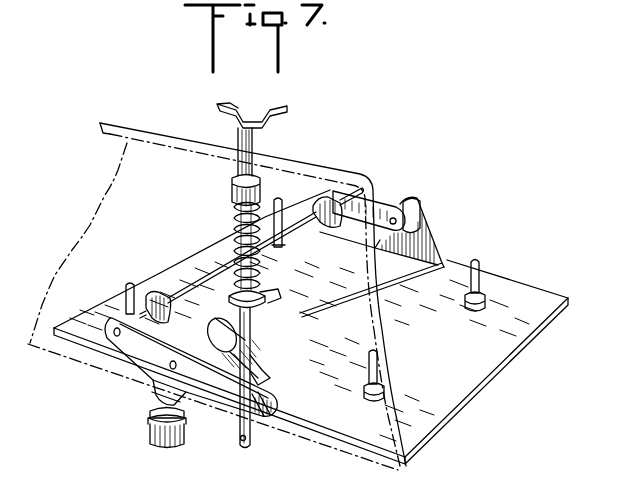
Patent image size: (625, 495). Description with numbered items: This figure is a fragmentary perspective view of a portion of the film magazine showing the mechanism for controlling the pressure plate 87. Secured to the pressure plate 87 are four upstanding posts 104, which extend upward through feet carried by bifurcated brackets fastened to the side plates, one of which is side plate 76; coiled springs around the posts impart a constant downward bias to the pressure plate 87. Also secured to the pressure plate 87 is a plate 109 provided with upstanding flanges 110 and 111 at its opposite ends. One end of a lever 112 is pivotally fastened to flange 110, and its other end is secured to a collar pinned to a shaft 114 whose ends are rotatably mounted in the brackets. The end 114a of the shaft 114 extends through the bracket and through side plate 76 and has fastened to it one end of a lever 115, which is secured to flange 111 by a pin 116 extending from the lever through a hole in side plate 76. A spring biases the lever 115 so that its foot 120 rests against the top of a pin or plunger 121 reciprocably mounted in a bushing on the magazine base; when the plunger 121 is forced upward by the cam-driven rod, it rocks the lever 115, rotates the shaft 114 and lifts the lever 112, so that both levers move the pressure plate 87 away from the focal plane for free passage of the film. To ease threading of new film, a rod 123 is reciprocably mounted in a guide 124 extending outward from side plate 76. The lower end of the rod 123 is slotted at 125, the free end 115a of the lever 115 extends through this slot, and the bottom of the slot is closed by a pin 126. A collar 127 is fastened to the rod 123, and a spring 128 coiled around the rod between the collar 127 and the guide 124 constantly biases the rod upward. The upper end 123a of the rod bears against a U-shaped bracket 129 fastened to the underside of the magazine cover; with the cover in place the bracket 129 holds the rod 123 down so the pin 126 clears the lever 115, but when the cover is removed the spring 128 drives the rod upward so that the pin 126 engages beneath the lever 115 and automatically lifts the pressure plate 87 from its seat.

The side plate 76 is at (112, 168).
The pressure plate 87 is at (525, 363).
The upstanding posts 104 is at (302, 197).
The plate 109 is at (410, 284).
The upstanding flange 110 is at (418, 242).
The upstanding flange 111 is at (216, 314).
The lever 112 is at (385, 205).
The shaft 114 is at (205, 270).
The end of shaft 114a is at (114, 336).
The lever 115 is at (140, 346).
The free end of lever 115a is at (280, 408).
The pin 116 is at (170, 369).
The foot 120 is at (160, 398).
The pin or plunger 121 is at (150, 424).
The rod 123 is at (242, 372).
The upper end of rod 123a is at (262, 145).
The guide 124 is at (266, 300).
The slot 125 is at (253, 386).
The pin 126 is at (240, 446).
The collar 127 is at (232, 190).
The spring 128 is at (240, 216).
The U-shaped bracket 129 is at (245, 110).